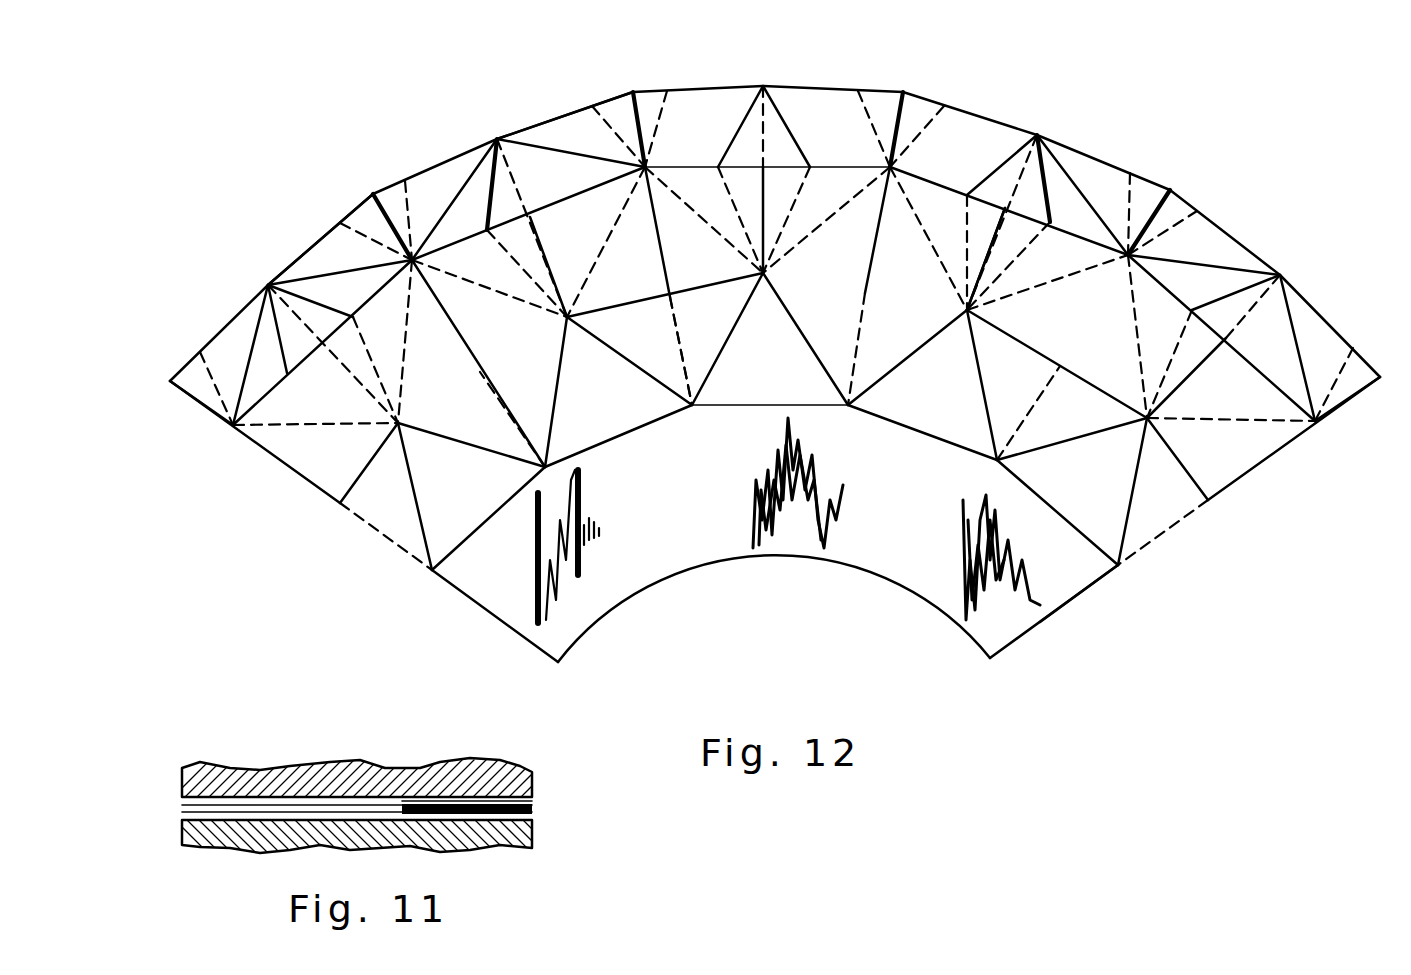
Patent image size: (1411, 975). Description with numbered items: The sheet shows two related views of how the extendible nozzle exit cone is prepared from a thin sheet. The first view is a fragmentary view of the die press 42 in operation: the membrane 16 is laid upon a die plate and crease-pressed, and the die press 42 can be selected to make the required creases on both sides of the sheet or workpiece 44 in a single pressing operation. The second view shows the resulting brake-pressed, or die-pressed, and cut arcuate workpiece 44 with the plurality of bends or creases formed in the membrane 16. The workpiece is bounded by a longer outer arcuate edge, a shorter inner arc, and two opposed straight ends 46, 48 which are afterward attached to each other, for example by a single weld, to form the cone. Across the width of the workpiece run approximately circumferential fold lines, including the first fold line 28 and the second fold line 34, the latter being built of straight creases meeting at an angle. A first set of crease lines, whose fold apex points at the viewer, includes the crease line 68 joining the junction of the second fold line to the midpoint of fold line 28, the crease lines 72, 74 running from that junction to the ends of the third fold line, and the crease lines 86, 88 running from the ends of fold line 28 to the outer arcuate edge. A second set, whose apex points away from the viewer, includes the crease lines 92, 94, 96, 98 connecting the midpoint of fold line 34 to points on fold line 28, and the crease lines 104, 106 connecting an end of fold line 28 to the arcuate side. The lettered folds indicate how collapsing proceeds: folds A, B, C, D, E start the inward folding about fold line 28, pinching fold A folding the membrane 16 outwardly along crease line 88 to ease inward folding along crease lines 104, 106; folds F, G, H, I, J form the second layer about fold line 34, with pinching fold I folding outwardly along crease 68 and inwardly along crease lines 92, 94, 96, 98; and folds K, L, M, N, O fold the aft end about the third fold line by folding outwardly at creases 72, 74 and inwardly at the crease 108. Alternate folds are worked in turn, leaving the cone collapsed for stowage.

In FIG. 12, the crease line 86 is at (624, 98).
In FIG. 12, the crease line 88 is at (371, 195).
In FIG. 12, the crease line 104 is at (430, 185).
In FIG. 12, the first fold line 28 is at (596, 188).
In FIG. 12, the crease line 106 is at (372, 242).
In FIG. 12, the crease line 74 is at (627, 358).
In FIG. 12, the crease 108 is at (675, 307).
In FIG. 12, the crease line 72 is at (728, 342).
In FIG. 12, the crease line 98 is at (963, 235).
In FIG. 12, the crease line 68 is at (988, 258).
In FIG. 12, the crease line 94 is at (928, 243).
In FIG. 12, the crease line 96 is at (1030, 261).
In FIG. 12, the crease line 92 is at (1034, 292).
In FIG. 12, the second fold line 34 is at (1032, 352).
In FIG. 12, the straight end 46 is at (462, 594).
In FIG. 12, the membrane 16 is at (508, 607).
In FIG. 12, the workpiece 44 is at (1060, 587).
In FIG. 11, the workpiece 44 is at (182, 807).
In FIG. 12, the straight end 48 is at (1030, 633).
In FIG. 11, the die press 42 is at (262, 753).
In FIG. 12, the fold A is at (634, 92).
In FIG. 12, the fold B is at (374, 193).
In FIG. 12, the fold C is at (168, 379).
In FIG. 12, the fold D is at (1171, 191).
In FIG. 12, the fold E is at (904, 92).
In FIG. 12, the fold F is at (537, 234).
In FIG. 12, the fold G is at (331, 354).
In FIG. 12, the fold H is at (1198, 365).
In FIG. 12, the fold I is at (996, 242).
In FIG. 12, the fold J is at (764, 194).
In FIG. 12, the fold K is at (686, 350).
In FIG. 12, the fold L is at (498, 396).
In FIG. 12, the fold M is at (349, 512).
In FIG. 12, the fold N is at (1021, 410).
In FIG. 12, the fold O is at (859, 340).